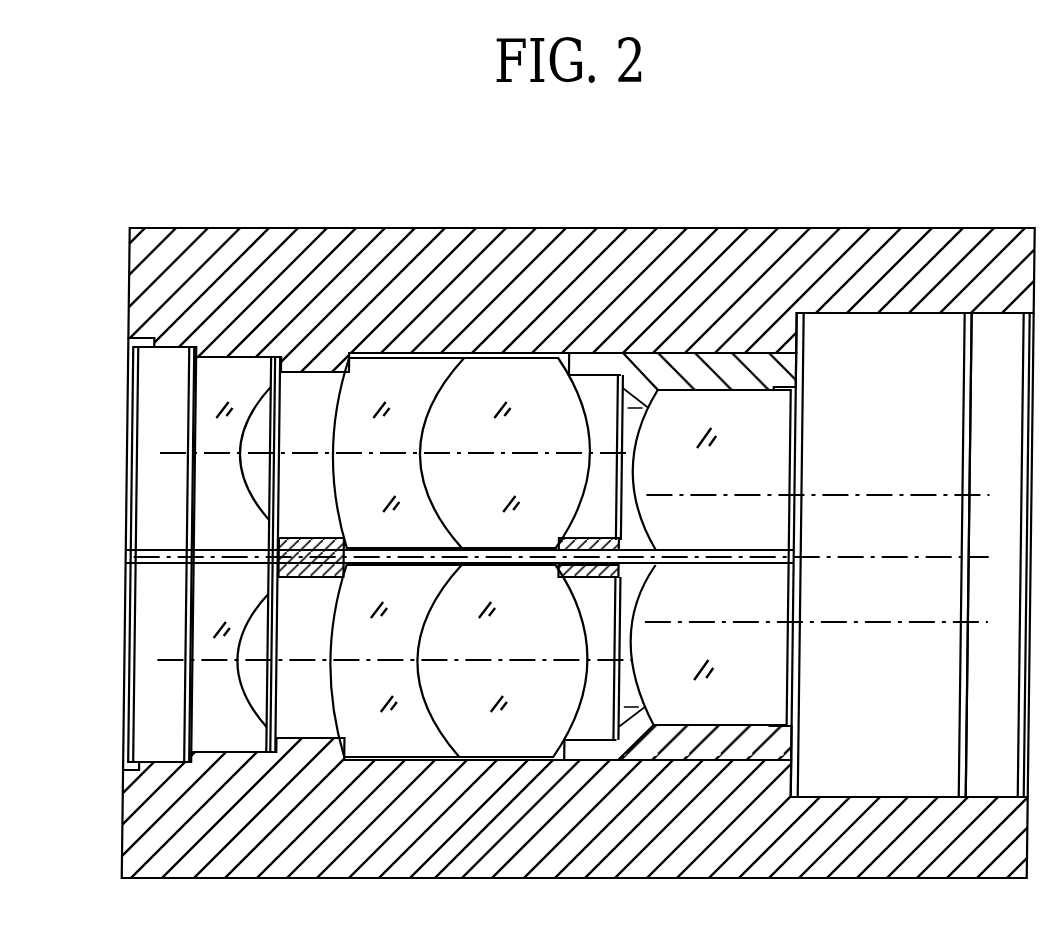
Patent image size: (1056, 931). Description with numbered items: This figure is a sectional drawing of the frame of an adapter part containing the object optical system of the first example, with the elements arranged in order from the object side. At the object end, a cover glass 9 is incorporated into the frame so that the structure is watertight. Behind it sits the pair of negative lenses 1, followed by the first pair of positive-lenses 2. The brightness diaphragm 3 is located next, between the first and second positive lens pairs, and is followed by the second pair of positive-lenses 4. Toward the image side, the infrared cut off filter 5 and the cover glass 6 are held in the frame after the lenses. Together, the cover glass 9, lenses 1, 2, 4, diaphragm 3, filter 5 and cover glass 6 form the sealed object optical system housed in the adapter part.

The pair of negative lenses 1 is at (256, 372).
The first pair of positive-lenses 2 is at (430, 390).
The brightness diaphragm 3 is at (615, 388).
The second pair of positive-lenses 4 is at (705, 402).
The infrared cut off filter 5 is at (887, 332).
The cover glass 6 is at (1008, 323).
The cover glass 9 is at (146, 722).